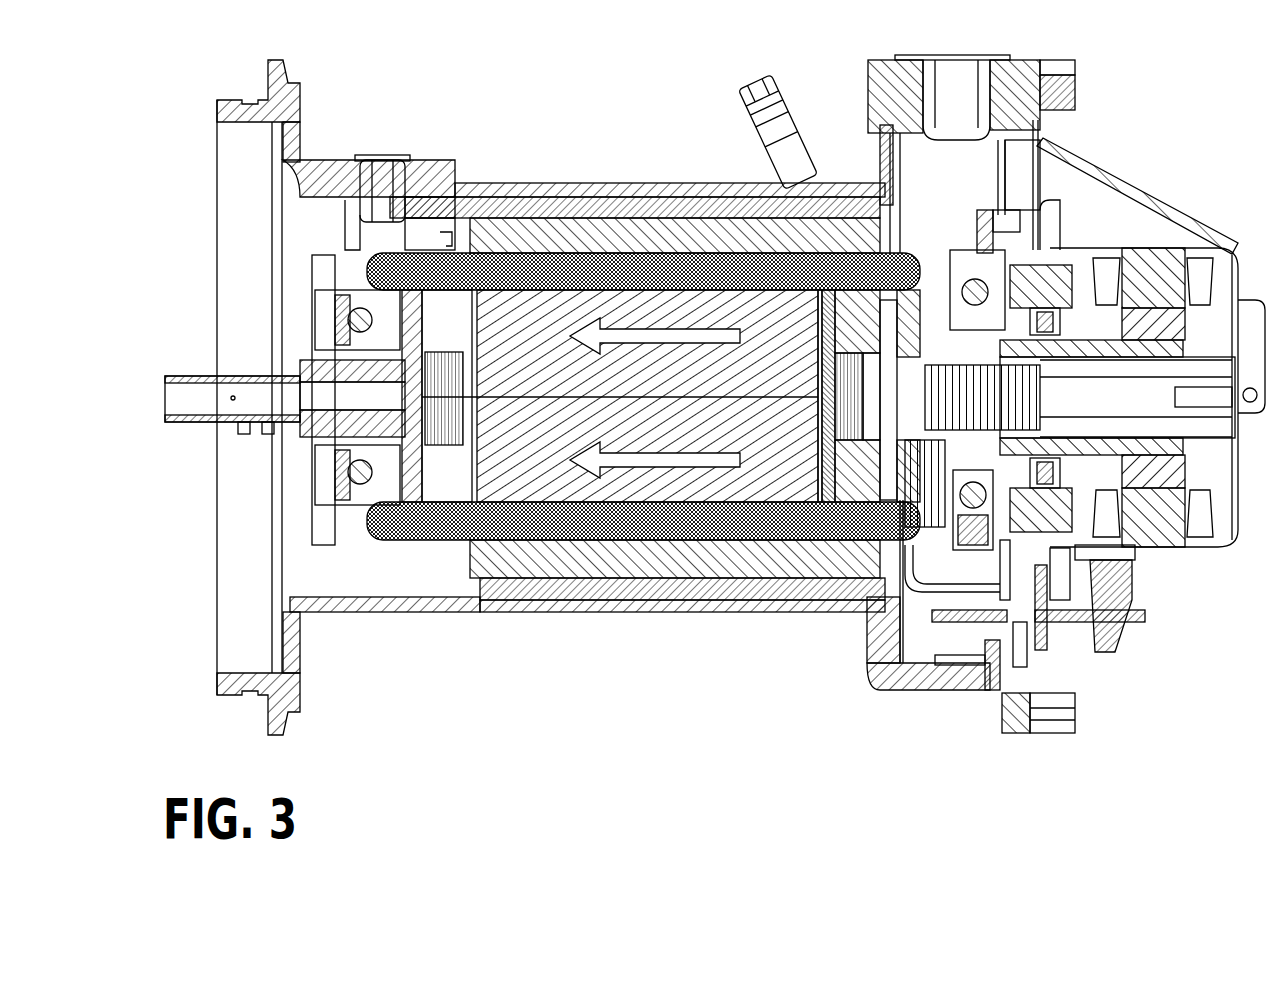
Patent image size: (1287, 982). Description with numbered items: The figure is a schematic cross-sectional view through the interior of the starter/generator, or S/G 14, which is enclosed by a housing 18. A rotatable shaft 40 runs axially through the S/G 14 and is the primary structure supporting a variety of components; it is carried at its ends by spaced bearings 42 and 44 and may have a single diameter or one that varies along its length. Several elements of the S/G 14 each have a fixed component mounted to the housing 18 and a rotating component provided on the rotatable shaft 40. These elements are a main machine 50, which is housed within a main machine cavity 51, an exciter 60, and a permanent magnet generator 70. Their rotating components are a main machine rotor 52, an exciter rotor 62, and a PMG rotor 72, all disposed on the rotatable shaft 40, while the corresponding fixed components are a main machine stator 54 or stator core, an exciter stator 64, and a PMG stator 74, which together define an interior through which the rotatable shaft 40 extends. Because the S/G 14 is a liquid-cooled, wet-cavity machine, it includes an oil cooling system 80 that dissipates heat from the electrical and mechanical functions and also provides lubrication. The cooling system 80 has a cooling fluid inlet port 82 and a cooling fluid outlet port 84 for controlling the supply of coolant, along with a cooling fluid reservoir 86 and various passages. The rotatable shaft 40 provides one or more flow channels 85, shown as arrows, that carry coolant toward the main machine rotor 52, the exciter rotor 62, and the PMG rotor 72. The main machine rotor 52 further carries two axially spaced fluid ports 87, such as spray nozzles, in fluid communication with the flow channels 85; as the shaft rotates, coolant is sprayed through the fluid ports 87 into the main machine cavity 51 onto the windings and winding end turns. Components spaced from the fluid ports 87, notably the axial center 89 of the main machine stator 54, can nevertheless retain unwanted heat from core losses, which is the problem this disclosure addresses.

The S/G 14 is at (432, 106).
The housing 18 is at (545, 192).
The rotatable shaft 40 is at (248, 440).
The bearing 42 is at (335, 537).
The bearing 44 is at (977, 510).
The main machine 50 is at (597, 178).
The main machine cavity 51 is at (442, 236).
The main machine rotor 52 is at (492, 483).
The main machine stator 54 is at (523, 563).
The exciter 60 is at (1160, 246).
The exciter rotor 62 is at (1173, 540).
The exciter stator 64 is at (1152, 540).
The permanent magnet generator 70 is at (1067, 249).
The PMG rotor 72 is at (1015, 520).
The PMG stator 74 is at (1068, 545).
The cooling system 80 is at (420, 225).
The cooling fluid inlet port 82 is at (383, 175).
The cooling fluid outlet port 84 is at (745, 95).
The flow channels 85 is at (628, 447).
The cooling fluid reservoir 86 is at (880, 638).
The fluid port 87 is at (383, 301).
The axial center 89 is at (650, 243).